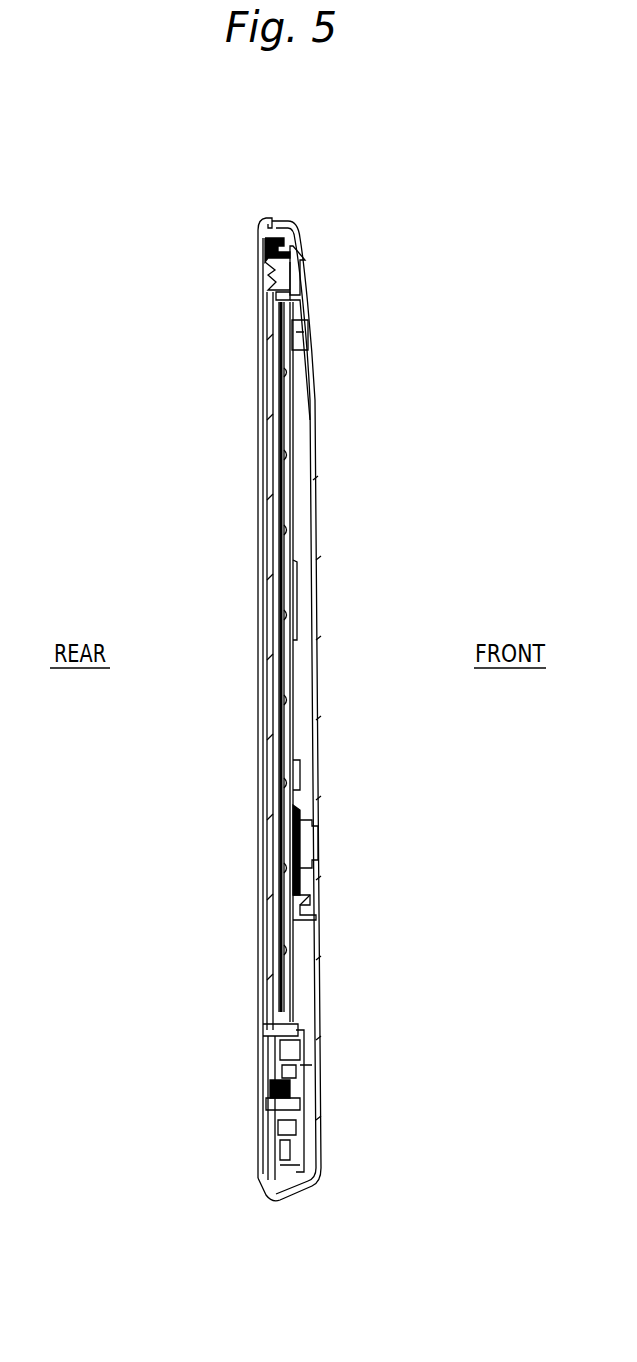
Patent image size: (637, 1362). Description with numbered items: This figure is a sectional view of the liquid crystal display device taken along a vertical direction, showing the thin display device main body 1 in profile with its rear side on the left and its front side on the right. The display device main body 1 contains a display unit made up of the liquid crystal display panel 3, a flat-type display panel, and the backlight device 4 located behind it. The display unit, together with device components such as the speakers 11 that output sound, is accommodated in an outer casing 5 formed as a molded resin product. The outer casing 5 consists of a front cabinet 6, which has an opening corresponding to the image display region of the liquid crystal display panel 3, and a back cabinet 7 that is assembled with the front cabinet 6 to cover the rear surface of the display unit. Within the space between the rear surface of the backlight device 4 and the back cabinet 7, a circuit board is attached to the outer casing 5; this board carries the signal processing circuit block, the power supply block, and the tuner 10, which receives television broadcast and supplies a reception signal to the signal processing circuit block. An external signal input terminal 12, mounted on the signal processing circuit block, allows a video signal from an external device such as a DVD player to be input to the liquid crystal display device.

The display device main body 1 is at (299, 240).
The liquid crystal display panel 3 is at (263, 542).
The backlight device 4 is at (300, 780).
The outer casing 5 is at (281, 228).
The front cabinet 6 is at (258, 244).
The back cabinet 7 is at (320, 510).
The tuner 10 is at (300, 688).
The speakers 11 is at (272, 1088).
The external signal input terminal 12 is at (300, 887).